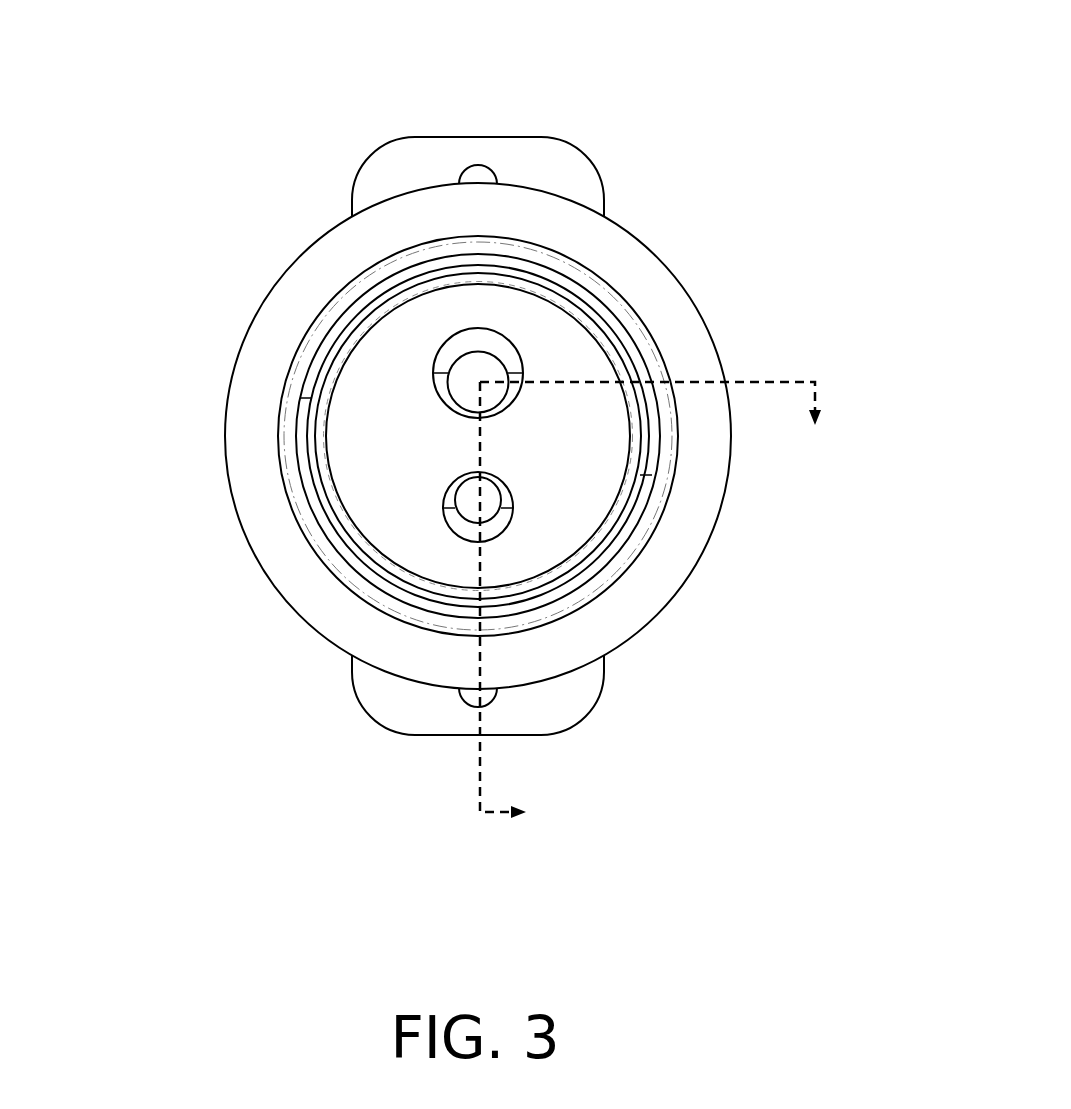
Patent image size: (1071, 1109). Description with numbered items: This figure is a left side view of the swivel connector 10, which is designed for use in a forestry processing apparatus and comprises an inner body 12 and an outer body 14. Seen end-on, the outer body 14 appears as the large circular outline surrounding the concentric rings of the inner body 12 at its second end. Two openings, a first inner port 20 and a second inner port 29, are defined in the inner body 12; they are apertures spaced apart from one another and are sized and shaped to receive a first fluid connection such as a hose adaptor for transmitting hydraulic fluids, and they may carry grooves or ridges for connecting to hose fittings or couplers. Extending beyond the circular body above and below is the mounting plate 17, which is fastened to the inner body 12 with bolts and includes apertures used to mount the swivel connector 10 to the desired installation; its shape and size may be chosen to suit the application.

The swivel connector 10 is at (742, 157).
The inner body 12 is at (567, 500).
The outer body 14 is at (665, 303).
The mounting plate 17 is at (437, 165).
The first inner port 20 is at (463, 372).
The second inner port 29 is at (465, 500).